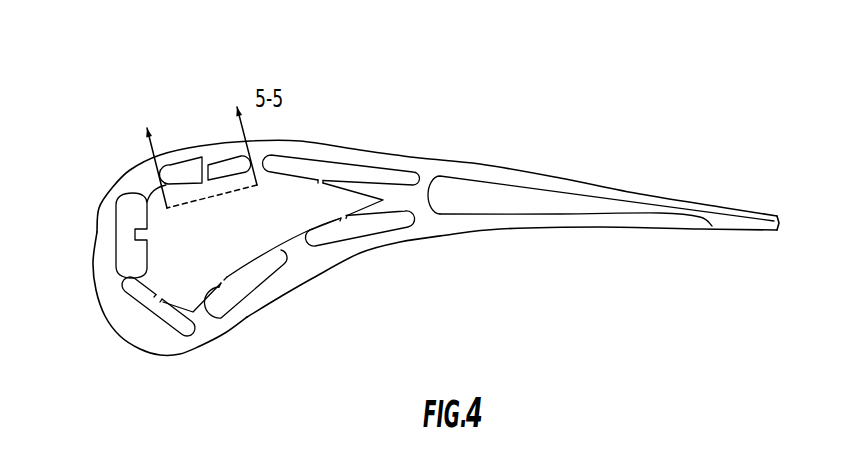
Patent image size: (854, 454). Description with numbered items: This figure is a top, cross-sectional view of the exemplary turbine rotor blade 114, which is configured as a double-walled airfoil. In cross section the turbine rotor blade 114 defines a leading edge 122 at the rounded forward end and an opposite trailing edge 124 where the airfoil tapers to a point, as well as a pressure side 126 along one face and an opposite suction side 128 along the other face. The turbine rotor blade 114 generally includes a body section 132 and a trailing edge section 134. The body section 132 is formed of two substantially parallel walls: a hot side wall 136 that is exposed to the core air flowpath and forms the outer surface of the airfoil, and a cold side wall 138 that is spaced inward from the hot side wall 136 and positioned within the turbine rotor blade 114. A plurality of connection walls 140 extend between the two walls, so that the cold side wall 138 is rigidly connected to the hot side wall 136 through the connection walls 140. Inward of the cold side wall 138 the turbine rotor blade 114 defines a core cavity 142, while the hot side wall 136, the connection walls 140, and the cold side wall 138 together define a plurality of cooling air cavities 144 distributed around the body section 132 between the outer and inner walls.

The turbine rotor blade 114 is at (536, 62).
The leading edge 122 is at (90, 293).
The trailing edge 124 is at (790, 222).
The pressure side 126 is at (380, 278).
The suction side 128 is at (355, 105).
The body section 132 is at (307, 120).
The trailing edge section 134 is at (701, 255).
The hot side wall 136 is at (208, 162).
The cold side wall 138 is at (193, 176).
The connection walls 140 is at (256, 182).
The core cavity 142 is at (232, 244).
The cooling air cavities 144 is at (174, 165).